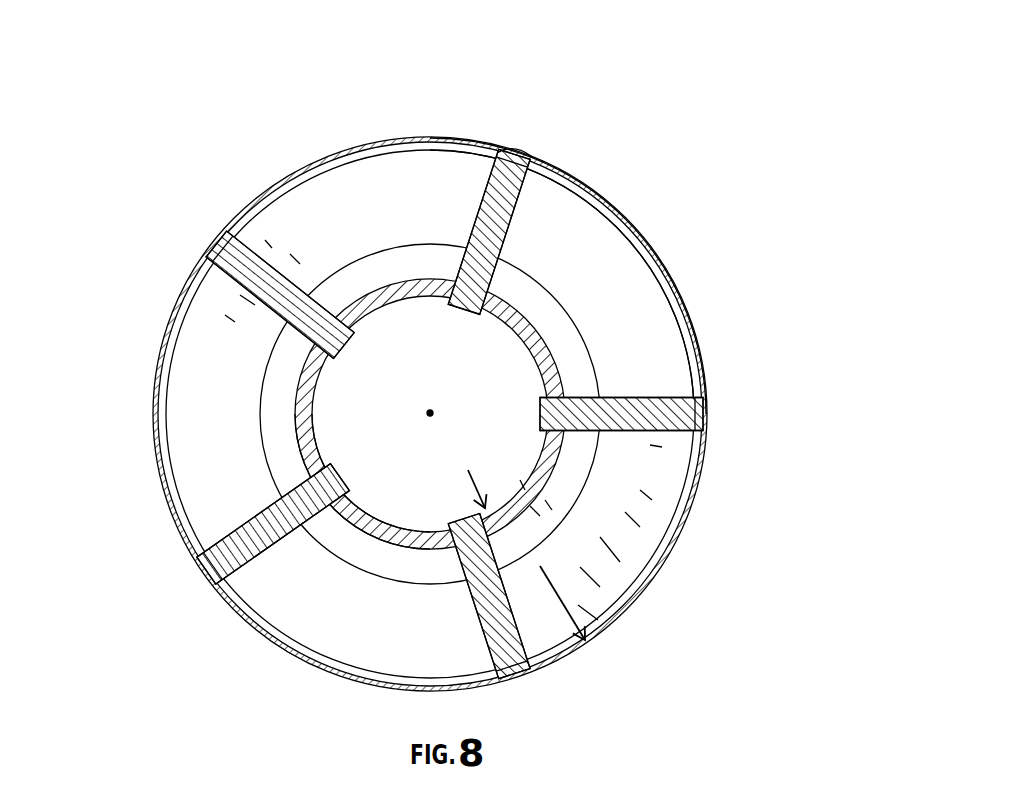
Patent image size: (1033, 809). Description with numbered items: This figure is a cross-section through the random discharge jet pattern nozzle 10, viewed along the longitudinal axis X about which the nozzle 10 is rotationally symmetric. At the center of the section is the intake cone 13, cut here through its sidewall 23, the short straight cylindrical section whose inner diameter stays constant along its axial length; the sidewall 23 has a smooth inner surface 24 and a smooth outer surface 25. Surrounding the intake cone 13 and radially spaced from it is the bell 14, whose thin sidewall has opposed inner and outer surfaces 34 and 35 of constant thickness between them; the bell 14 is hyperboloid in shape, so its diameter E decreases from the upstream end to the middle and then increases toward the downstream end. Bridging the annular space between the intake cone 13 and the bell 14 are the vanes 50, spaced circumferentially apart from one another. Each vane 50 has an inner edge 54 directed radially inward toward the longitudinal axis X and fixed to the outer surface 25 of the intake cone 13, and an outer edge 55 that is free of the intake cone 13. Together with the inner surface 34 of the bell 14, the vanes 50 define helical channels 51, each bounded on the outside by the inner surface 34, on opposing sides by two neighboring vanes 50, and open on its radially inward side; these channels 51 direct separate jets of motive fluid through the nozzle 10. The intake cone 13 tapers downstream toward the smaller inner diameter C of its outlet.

The random discharge jet pattern nozzle 10 is at (484, 355).
The intake cone 13 is at (680, 447).
The bell 14 is at (700, 492).
The sidewall 23 is at (390, 540).
The inner surface of the intake cone 24 is at (348, 510).
The outer surface of the intake cone 25 is at (345, 532).
The inner surface of the bell 34 is at (682, 327).
The outer surface of the bell 35 is at (680, 322).
The vane 50 is at (488, 188).
The helical channel 51 is at (373, 198).
The inner edge of the vane 54 is at (458, 318).
The outer edge of the vane 55 is at (518, 157).
The inner diameter of the outlet C is at (482, 478).
The diameter of the bell E is at (553, 588).
The longitudinal axis x is at (434, 414).